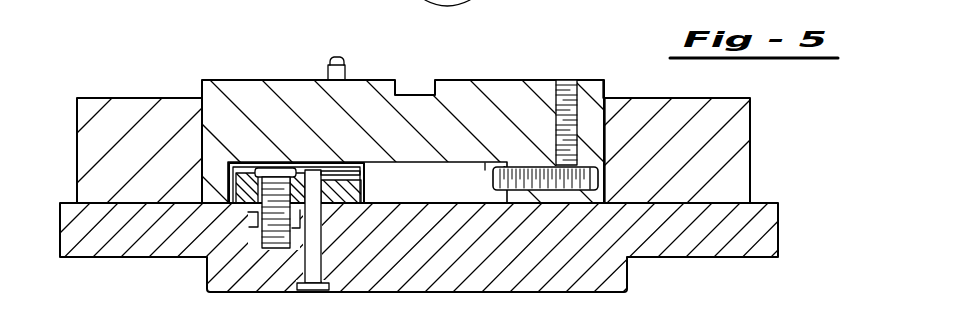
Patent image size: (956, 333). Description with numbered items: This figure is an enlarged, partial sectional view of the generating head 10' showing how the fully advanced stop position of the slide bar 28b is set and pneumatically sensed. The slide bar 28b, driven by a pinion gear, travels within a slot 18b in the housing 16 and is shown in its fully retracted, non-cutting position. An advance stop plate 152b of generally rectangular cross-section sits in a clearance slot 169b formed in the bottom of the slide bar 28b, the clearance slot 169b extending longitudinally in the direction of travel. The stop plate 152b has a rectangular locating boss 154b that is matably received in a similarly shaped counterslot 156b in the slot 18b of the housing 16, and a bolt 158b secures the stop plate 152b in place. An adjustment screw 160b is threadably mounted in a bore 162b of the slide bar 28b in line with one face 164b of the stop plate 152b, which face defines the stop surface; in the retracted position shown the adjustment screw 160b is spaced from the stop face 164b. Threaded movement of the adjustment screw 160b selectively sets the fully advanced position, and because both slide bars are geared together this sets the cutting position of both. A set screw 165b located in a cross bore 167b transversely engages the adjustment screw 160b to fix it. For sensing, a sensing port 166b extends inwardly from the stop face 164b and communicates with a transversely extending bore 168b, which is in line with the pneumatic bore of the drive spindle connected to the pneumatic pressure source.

The fixture assembly 10' is at (391, 215).
The housing 16 is at (765, 238).
The slot 18b is at (459, 170).
The slide bar 28b is at (560, 34).
The advance stop plate 152b is at (242, 163).
The locating boss 154b is at (295, 220).
The counterslot 156b is at (250, 218).
The bolt 158b is at (277, 167).
The adjustment screw 160b is at (605, 153).
The bore 162b is at (605, 182).
The stop face 164b is at (366, 185).
The set screw 165b is at (606, 98).
The sensing port 166b is at (366, 178).
The cross bore 167b is at (563, 83).
The transverse bore 168b is at (321, 262).
The clearance slot 169b is at (485, 163).